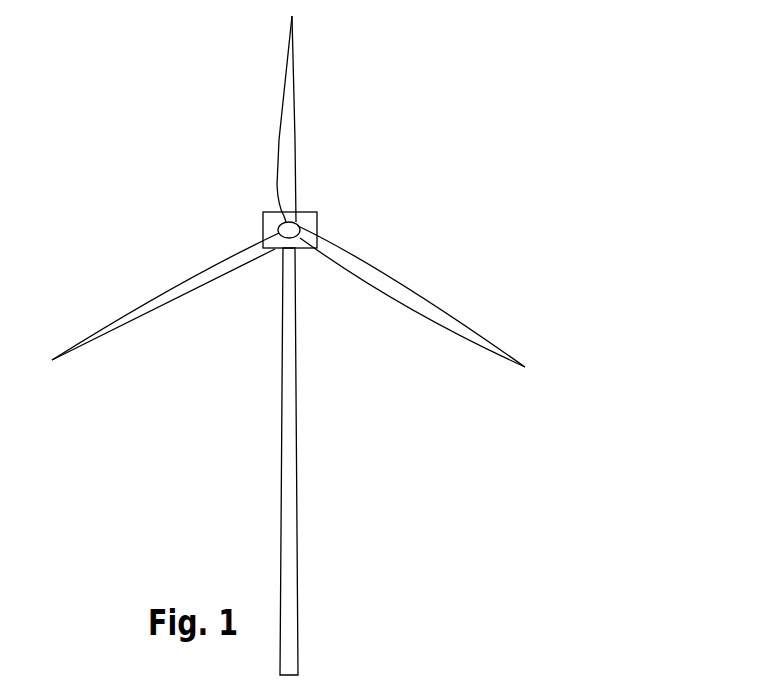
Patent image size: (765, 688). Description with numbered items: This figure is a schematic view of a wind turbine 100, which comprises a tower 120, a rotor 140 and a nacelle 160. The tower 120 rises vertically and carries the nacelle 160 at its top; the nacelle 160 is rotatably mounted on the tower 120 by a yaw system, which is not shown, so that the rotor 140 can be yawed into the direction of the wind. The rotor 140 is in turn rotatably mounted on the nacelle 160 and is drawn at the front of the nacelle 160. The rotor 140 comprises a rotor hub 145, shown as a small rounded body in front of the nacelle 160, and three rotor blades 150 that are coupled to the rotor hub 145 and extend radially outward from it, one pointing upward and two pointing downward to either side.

The wind turbine 100 is at (525, 88).
The tower 120 is at (292, 363).
The rotor 140 is at (398, 90).
The rotor hub 145 is at (298, 233).
The rotor blades 150 is at (228, 252).
The nacelle 160 is at (258, 258).